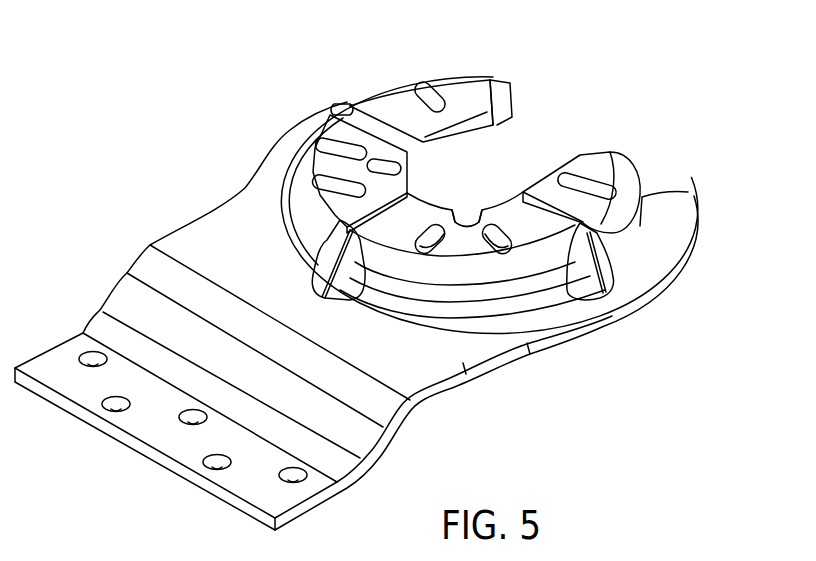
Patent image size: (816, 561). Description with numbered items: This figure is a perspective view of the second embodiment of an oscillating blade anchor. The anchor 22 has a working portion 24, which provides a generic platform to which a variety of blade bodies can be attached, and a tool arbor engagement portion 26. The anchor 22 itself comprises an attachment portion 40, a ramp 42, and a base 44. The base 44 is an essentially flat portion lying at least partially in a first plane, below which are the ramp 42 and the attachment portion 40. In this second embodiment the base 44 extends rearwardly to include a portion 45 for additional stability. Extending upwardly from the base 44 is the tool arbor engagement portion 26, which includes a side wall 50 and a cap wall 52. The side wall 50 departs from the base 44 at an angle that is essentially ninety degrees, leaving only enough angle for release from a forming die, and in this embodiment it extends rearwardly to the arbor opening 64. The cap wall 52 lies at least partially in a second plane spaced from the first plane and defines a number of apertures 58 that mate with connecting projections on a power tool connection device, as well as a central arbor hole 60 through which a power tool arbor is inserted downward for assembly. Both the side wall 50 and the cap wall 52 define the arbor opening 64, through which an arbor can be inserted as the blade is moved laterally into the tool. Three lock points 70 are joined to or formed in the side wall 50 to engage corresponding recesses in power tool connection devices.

The anchor 22 is at (186, 176).
The working portion 24 is at (147, 478).
The tool arbor engagement portion 26 is at (417, 227).
The attachment portion 40 is at (50, 368).
The ramp 42 is at (388, 450).
The base 44 is at (180, 228).
The portion 45 is at (514, 118).
The side wall 50 is at (618, 243).
The cap wall 52 is at (589, 165).
The apertures 58 is at (502, 250).
The central arbor hole 60 is at (440, 167).
The arbor opening 64 is at (538, 133).
The lock point 70 is at (333, 112).